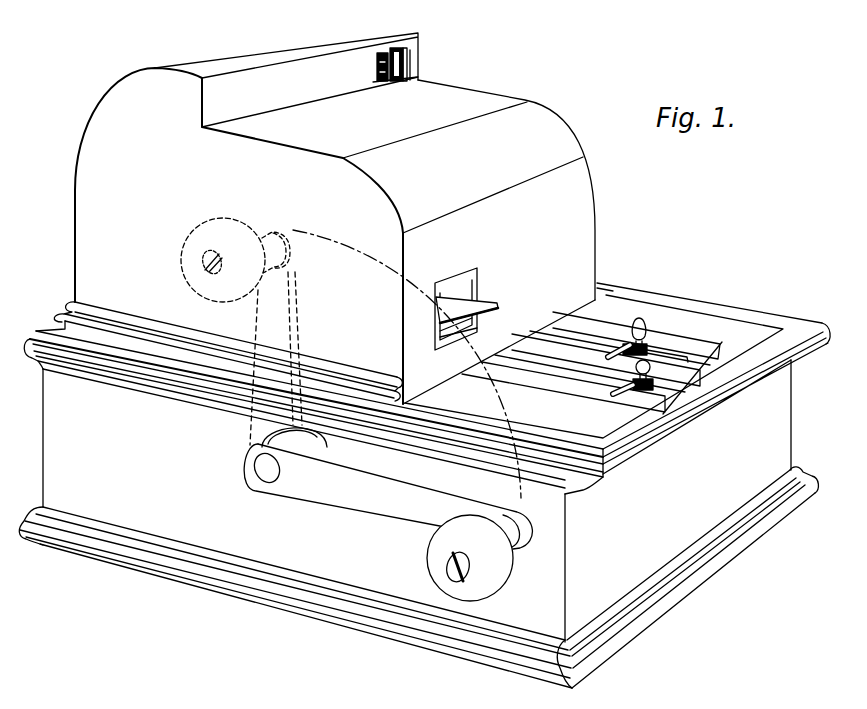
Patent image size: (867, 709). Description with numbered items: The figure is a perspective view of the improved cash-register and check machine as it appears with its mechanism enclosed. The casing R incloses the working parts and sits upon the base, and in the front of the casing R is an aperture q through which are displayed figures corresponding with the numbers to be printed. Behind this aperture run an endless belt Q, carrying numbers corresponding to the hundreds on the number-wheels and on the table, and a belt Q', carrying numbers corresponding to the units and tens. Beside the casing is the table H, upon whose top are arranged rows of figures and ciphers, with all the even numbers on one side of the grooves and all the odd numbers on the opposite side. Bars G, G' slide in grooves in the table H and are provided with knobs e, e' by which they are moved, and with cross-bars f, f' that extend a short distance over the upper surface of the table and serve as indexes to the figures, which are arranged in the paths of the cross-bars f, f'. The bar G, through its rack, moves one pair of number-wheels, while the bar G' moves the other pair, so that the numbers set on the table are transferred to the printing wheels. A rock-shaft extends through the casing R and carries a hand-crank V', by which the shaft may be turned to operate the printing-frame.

The casing R is at (335, 265).
The endless belt Q is at (366, 45).
The belt Q' is at (397, 45).
The aperture q is at (408, 56).
The table H is at (613, 360).
The bar G is at (592, 374).
The bar G' is at (625, 333).
The knob e is at (643, 369).
The knob e' is at (647, 328).
The cross-bar f is at (626, 399).
The cross-bar f' is at (648, 331).
The hand-crank V' is at (388, 514).